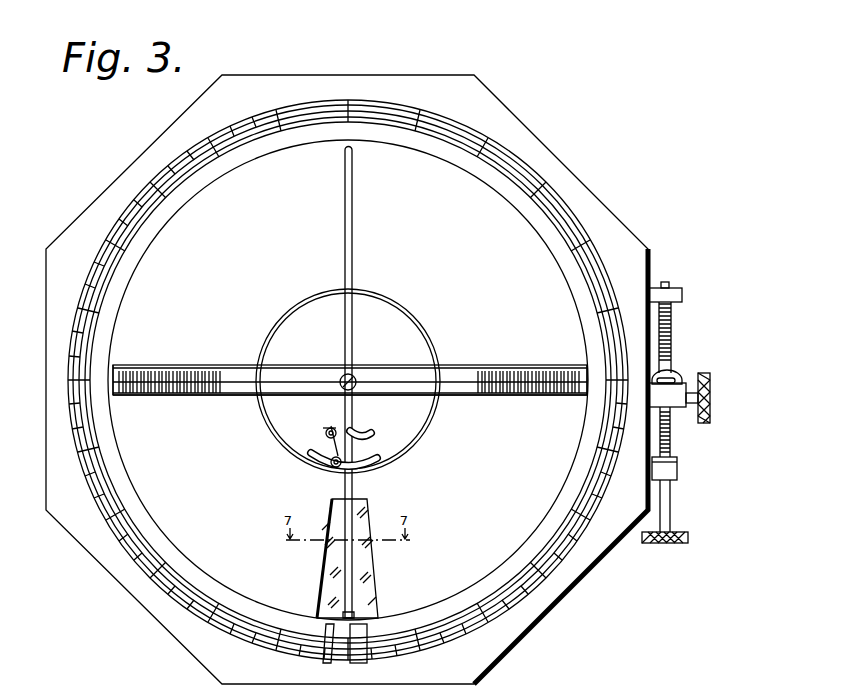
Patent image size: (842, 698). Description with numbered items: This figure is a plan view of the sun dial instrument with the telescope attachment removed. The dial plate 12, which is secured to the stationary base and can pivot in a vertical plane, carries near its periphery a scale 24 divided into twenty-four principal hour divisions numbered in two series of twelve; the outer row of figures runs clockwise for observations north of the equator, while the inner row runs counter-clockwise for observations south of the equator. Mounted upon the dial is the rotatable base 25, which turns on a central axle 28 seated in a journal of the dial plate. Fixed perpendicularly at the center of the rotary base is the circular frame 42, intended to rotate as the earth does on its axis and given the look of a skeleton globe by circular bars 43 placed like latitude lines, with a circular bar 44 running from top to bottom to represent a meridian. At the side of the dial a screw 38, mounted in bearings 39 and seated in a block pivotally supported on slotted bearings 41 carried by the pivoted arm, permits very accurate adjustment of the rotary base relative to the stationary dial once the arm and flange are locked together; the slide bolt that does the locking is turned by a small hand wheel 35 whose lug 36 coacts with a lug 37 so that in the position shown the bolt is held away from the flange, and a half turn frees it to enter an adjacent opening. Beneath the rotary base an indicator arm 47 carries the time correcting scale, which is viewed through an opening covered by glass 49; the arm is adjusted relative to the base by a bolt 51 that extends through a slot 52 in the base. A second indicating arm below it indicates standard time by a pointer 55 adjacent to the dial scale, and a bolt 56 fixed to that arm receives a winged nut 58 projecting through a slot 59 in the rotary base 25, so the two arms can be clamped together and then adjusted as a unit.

The dial plate 12 is at (530, 141).
The scale 24 is at (558, 208).
The rotatable base 25 is at (348, 380).
The central axle 28 is at (356, 376).
The hand wheel 35 is at (702, 424).
The lug 36 is at (706, 380).
The lug 37 is at (684, 384).
The screw 38 is at (672, 512).
The bearings 39 is at (678, 470).
The bearings 41 is at (673, 372).
The circular frame 42 is at (156, 367).
The circular bars 43 is at (299, 459).
The circular bar 44 is at (353, 234).
The indicator arm 47 is at (358, 638).
The glass 49 is at (323, 583).
The bolt 51 is at (333, 468).
The slot 52 is at (380, 463).
The pointer 55 is at (330, 634).
The bolt 56 is at (327, 441).
The winged nut 58 is at (324, 433).
The slot 59 is at (364, 428).